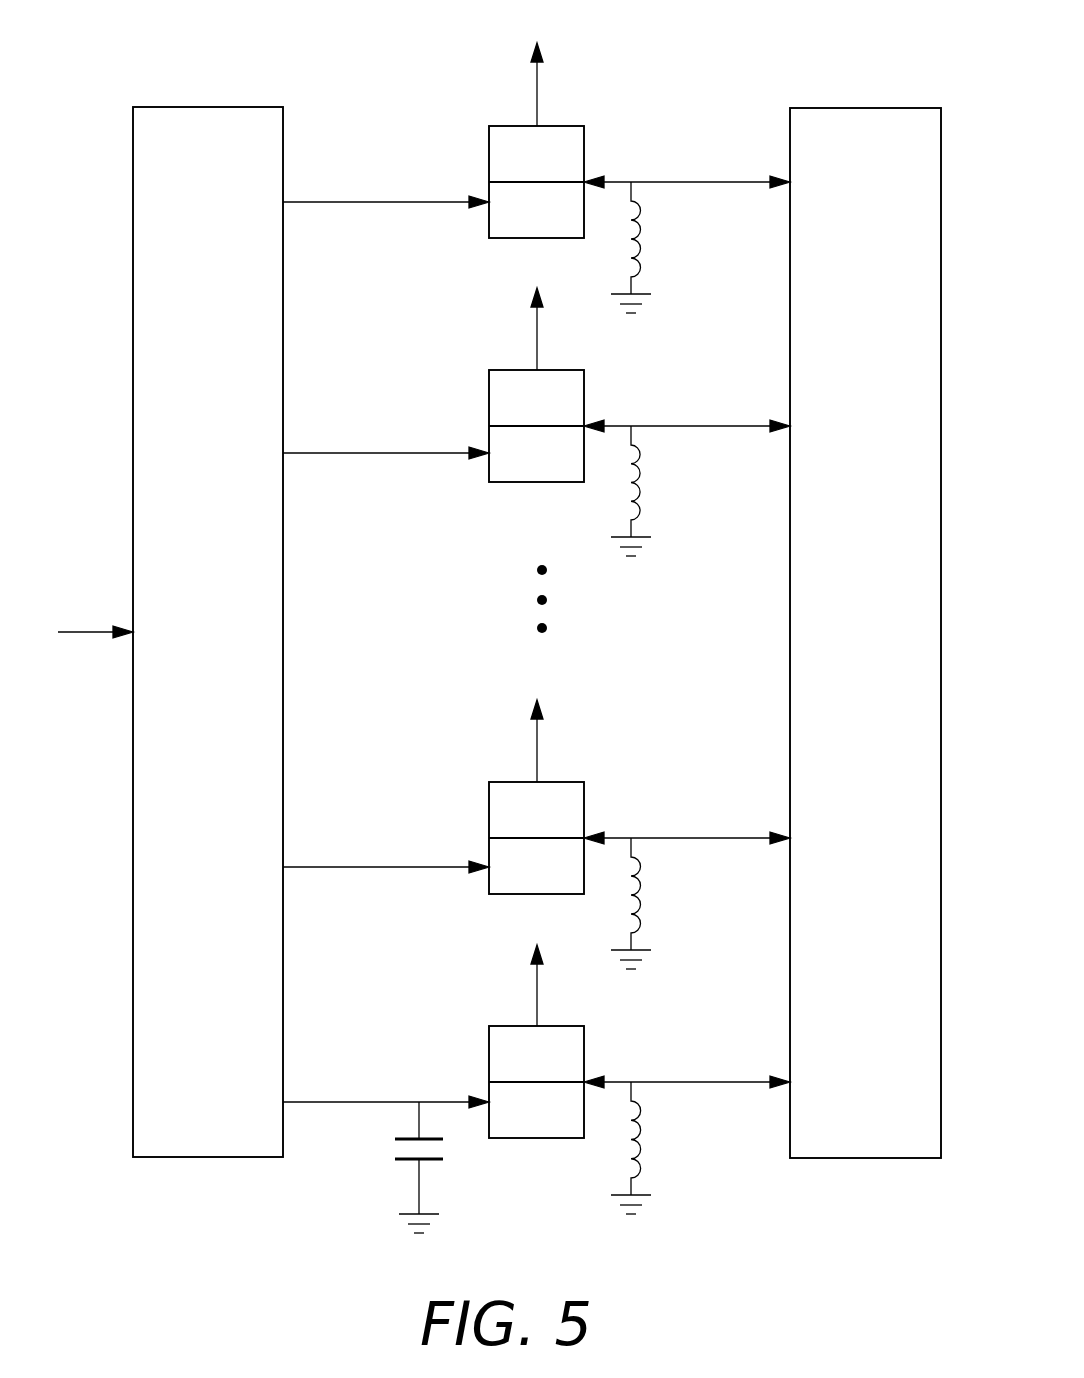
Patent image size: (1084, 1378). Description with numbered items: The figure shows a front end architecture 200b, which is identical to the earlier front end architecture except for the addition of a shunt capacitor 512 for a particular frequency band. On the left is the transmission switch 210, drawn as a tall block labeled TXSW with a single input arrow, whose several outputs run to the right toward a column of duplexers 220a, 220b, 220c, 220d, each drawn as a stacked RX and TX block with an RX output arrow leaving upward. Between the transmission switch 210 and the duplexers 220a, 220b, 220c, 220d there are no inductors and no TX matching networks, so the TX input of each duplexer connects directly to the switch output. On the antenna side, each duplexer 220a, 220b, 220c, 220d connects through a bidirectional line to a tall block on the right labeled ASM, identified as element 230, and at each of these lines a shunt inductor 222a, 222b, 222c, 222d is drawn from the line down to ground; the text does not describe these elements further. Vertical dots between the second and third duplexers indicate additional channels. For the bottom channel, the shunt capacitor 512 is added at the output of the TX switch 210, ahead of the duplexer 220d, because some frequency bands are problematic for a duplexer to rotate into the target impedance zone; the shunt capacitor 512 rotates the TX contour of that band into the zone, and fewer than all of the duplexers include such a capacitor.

The front end architecture 200b is at (265, 70).
The transmission switch 210 is at (175, 107).
The antenna switch module (ASM) 230 is at (862, 108).
The duplexer 220a is at (507, 126).
The duplexer 220b is at (507, 370).
The duplexer 220c is at (507, 782).
The duplexer 220d is at (507, 1026).
The shunt inductor 222a is at (636, 240).
The shunt inductor 222b is at (636, 483).
The shunt inductor 222c is at (636, 896).
The shunt inductor 222d is at (636, 1141).
The shunt capacitor 512 is at (377, 1158).